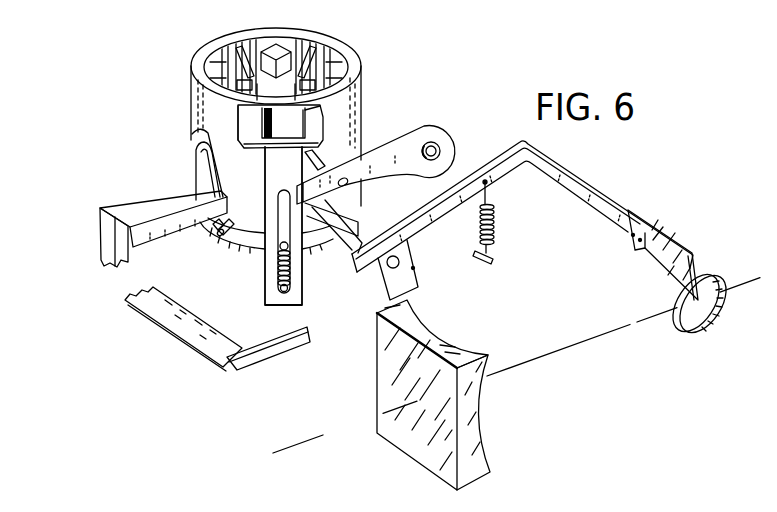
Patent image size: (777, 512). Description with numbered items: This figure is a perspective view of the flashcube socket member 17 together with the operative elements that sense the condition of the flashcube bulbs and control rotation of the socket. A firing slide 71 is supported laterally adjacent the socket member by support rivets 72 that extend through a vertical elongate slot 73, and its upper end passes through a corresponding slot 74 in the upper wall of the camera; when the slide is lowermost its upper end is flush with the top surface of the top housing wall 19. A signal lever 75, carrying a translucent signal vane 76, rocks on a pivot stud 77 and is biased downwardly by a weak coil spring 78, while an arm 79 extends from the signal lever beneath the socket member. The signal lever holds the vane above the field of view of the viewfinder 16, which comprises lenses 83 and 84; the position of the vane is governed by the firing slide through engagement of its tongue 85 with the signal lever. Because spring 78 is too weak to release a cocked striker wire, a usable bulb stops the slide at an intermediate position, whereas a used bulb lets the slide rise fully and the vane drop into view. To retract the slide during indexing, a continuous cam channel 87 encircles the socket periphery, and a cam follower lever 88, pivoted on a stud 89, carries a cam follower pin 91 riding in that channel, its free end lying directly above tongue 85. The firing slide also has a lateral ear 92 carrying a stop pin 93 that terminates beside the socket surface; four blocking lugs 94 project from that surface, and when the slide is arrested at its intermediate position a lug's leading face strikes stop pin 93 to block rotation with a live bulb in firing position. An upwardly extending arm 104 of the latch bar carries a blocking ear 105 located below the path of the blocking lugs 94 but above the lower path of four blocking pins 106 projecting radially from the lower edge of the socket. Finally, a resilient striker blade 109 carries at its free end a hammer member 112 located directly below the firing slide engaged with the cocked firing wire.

The viewfinder 16 is at (392, 452).
The socket member 17 is at (362, 74).
The top housing wall 19 is at (235, 108).
The firing slide 71 is at (306, 118).
The support rivets 72 is at (276, 250).
The vertical elongate slot 73 is at (290, 265).
The slot 74 is at (247, 128).
The signal lever 75 is at (441, 212).
The signal vane 76 is at (667, 249).
The pivot stud 77 is at (407, 288).
The coil spring 78 is at (498, 231).
The arm 79 is at (348, 243).
The viewfinder lens 83 is at (488, 390).
The viewfinder lens 84 is at (697, 329).
The tongue 85 is at (357, 214).
The cam channel 87 is at (200, 153).
The cam follower lever 88 is at (392, 157).
The stud 89 is at (441, 151).
The cam follower pin 91 is at (327, 160).
The lateral ear 92 is at (262, 140).
The stop pin 93 is at (197, 190).
The blocking lugs 94 is at (226, 236).
The upwardly extending arm 104 is at (100, 232).
The blocking ear 105 is at (152, 230).
The blocking pins 106 is at (216, 228).
The striker blade 109 is at (173, 320).
The hammer member 112 is at (280, 349).